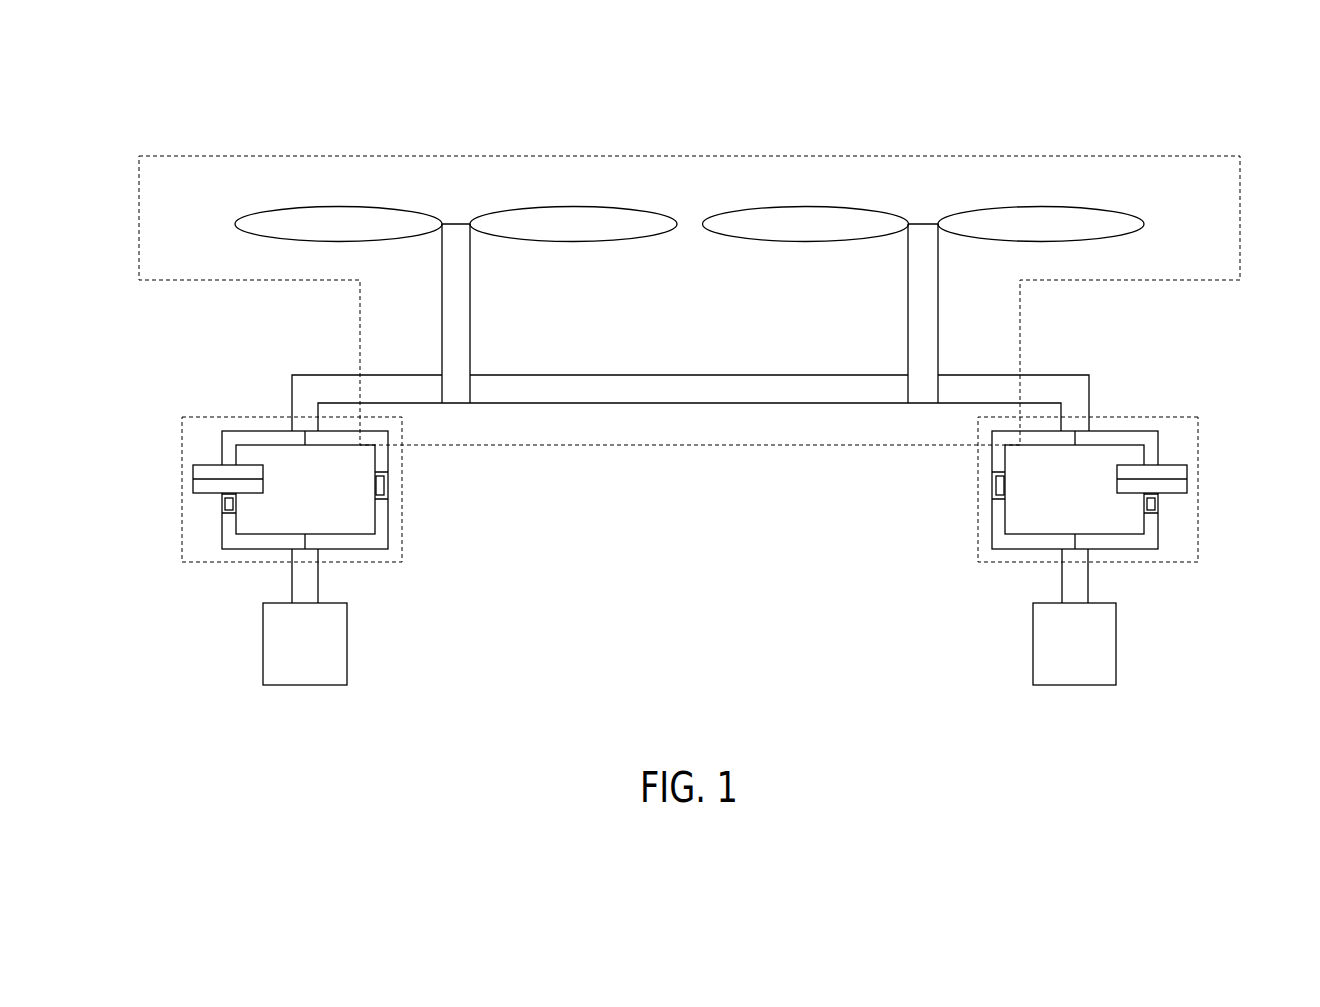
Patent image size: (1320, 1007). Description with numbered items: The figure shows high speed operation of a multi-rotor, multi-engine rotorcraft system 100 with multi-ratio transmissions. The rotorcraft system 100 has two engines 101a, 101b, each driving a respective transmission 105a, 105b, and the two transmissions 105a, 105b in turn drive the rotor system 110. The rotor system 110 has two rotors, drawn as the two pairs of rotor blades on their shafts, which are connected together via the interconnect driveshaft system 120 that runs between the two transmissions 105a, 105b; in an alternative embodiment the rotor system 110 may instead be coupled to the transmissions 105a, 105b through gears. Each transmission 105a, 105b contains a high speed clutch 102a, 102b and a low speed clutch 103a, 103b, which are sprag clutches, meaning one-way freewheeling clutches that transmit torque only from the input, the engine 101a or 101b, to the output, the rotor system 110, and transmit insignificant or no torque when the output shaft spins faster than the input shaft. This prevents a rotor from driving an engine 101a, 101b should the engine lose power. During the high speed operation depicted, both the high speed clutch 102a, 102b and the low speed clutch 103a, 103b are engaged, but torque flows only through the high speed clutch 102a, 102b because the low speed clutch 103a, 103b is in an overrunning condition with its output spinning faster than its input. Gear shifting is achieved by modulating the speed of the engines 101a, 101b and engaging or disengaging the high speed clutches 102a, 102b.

The rotorcraft system 100 is at (892, 69).
The rotor system 110 is at (373, 157).
The interconnect driveshaft system 120 is at (703, 375).
The transmission 105a is at (181, 430).
The transmission 105b is at (1200, 430).
The high speed clutch 102a is at (221, 502).
The high speed clutch 102b is at (1158, 502).
The low speed clutch 103a is at (387, 486).
The low speed clutch 103b is at (993, 486).
The engine 101a is at (327, 656).
The engine 101b is at (1097, 656).